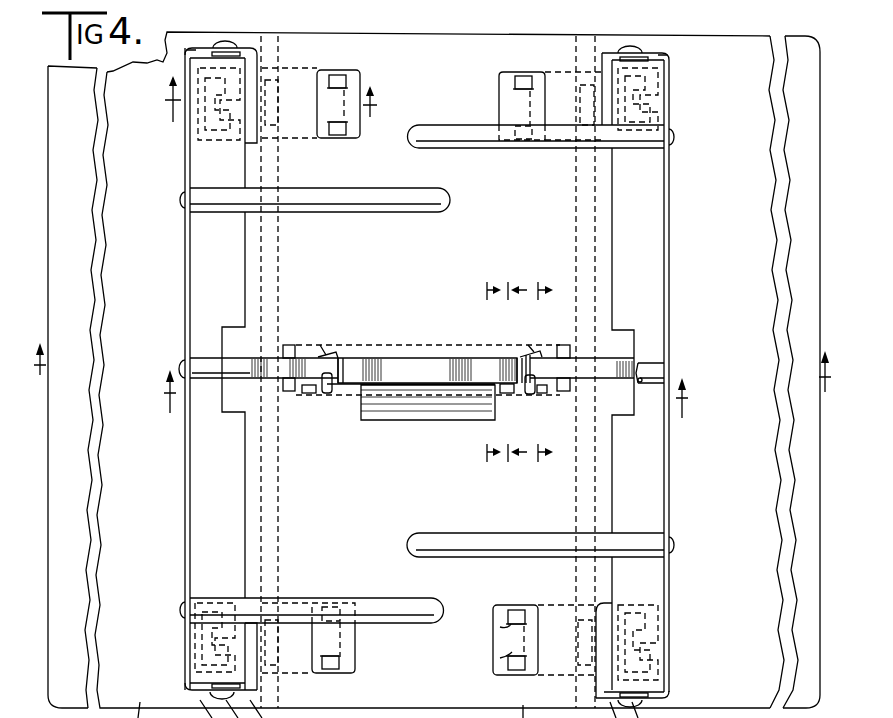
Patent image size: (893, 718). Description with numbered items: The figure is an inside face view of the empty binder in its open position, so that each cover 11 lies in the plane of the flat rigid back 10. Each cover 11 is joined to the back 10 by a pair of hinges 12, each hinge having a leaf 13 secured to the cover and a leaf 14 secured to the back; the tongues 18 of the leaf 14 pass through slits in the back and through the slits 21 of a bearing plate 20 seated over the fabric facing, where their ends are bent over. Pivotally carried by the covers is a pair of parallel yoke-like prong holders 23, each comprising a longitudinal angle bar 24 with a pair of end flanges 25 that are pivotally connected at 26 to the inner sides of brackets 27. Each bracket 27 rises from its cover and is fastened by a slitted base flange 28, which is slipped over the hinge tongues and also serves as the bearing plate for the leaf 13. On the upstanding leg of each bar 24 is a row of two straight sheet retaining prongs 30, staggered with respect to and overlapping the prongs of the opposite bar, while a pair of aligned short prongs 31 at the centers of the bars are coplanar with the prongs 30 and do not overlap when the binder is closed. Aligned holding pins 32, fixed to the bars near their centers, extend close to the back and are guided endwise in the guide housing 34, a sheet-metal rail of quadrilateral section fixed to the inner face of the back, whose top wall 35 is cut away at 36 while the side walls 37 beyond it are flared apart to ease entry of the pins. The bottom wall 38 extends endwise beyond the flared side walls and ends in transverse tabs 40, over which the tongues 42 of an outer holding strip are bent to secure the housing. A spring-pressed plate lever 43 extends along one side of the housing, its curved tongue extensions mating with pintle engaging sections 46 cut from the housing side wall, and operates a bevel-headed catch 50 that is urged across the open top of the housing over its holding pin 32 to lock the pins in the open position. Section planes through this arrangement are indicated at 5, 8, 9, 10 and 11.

The section line 5 is at (432, 374).
The section line 8 is at (424, 394).
The section line 9 is at (545, 374).
The back 10 is at (519, 374).
The cover 11 is at (496, 374).
The hinge 12 is at (280, 692).
The hinge leaf 13 is at (297, 68).
The hinge leaf 14 is at (660, 90).
The tongue 18 is at (337, 74).
The bearing plate 20 is at (319, 127).
The slit 21 is at (500, 627).
The prong holder 23 is at (180, 549).
The angle bar 24 is at (185, 505).
The end flange 25 is at (212, 52).
The pivotal connection 26 is at (219, 42).
The bracket 27 is at (199, 47).
The base flange 28 is at (249, 54).
The sheet retaining prong 30 is at (384, 205).
The short prong 31 is at (203, 358).
The holding pin 32 is at (265, 358).
The guide housing 34 is at (465, 352).
The top wall 35 is at (423, 365).
The cut-away 36 is at (344, 370).
The side wall 37 is at (331, 354).
The bottom wall 38 is at (326, 355).
The transverse tab 40 is at (305, 344).
The tongue 42 is at (290, 344).
The plate lever 43 is at (447, 420).
The pintle engaging section 46 is at (505, 393).
The catch 50 is at (330, 394).